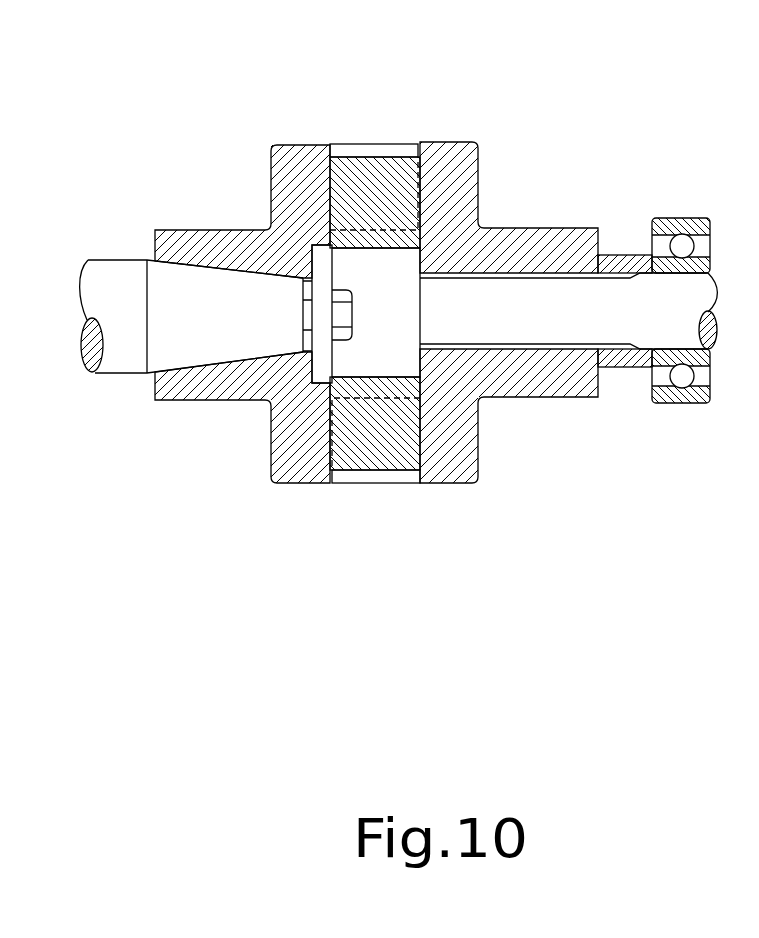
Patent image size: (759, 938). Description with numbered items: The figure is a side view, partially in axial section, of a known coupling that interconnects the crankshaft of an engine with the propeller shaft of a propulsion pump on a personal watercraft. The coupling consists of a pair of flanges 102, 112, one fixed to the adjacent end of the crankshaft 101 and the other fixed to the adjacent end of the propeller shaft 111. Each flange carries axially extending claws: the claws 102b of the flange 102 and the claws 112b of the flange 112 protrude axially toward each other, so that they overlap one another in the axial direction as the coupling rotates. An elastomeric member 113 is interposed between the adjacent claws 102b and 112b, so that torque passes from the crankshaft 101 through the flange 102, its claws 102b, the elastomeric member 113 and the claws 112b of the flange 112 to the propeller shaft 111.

The crankshaft 101 is at (195, 282).
The flange 102 is at (303, 487).
The claws 102b is at (340, 138).
The propeller shaft 111 is at (530, 297).
The flange 112 is at (453, 488).
The claws 112b is at (380, 485).
The elastomeric member 113 is at (362, 165).